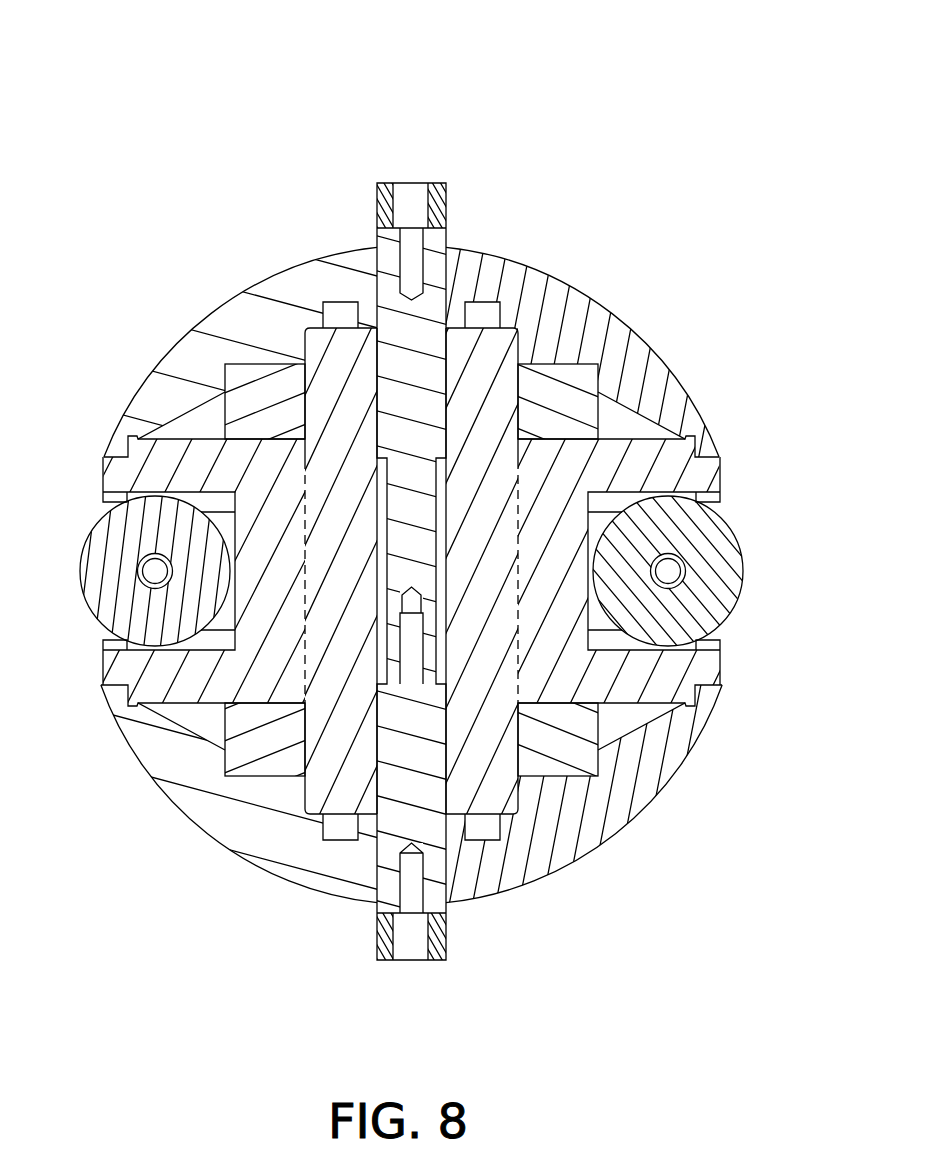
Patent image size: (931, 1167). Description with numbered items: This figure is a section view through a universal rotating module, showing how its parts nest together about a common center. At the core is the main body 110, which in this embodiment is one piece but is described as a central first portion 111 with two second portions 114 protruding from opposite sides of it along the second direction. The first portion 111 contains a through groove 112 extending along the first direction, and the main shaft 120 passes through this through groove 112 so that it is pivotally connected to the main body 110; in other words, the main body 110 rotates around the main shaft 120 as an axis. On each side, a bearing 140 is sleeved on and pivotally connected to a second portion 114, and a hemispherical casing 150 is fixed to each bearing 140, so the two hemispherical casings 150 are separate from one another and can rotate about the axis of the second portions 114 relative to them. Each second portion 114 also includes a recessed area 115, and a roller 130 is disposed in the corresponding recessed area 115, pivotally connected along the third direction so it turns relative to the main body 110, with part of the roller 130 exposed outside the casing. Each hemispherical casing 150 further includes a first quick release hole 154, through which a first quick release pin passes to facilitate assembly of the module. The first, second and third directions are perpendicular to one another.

The main body 110 is at (465, 583).
The first portion 111 is at (508, 352).
The through groove 112 is at (448, 374).
The second portion 114 is at (148, 443).
The recessed area 115 is at (215, 645).
The main shaft 120 is at (430, 832).
The roller 130 is at (104, 565).
The bearing 140 is at (271, 765).
The hemispherical casing 150 is at (210, 331).
The first quick release hole 154 is at (93, 508).